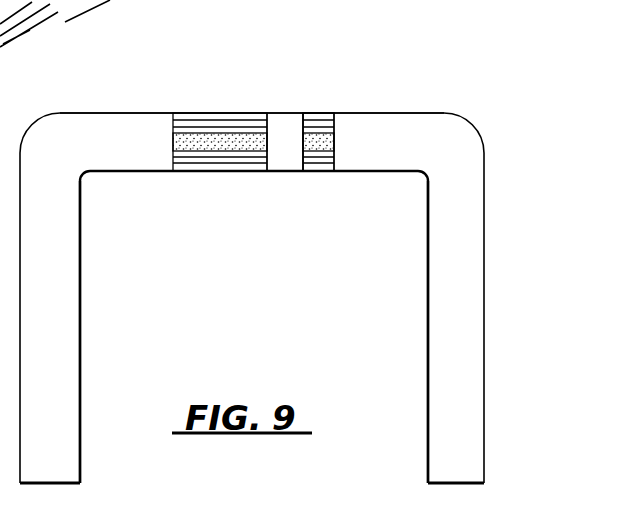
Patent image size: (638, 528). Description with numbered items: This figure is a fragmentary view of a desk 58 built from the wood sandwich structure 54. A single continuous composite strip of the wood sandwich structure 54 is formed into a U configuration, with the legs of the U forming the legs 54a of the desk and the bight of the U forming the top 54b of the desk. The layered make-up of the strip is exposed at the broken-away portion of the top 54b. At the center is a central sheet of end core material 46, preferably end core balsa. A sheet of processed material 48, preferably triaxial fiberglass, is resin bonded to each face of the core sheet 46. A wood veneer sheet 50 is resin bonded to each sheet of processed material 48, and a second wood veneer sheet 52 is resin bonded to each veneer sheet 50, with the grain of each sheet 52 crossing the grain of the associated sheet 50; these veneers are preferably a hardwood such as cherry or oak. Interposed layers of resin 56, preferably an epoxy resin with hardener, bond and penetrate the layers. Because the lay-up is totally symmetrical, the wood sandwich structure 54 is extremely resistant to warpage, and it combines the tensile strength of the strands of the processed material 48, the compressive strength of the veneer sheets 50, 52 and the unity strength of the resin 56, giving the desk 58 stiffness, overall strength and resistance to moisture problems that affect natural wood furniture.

The central sheet of end core material 46 is at (284, 150).
The sheet of processed material 48 is at (272, 138).
The wood veneer sheet 50 is at (270, 126).
The second wood veneer sheet 52 is at (265, 118).
The wood sandwich structure 54 is at (127, 113).
The legs of the desk 54a is at (81, 308).
The top of the desk 54b is at (155, 112).
The layers of resin 56 is at (305, 171).
The desk 58 is at (430, 101).